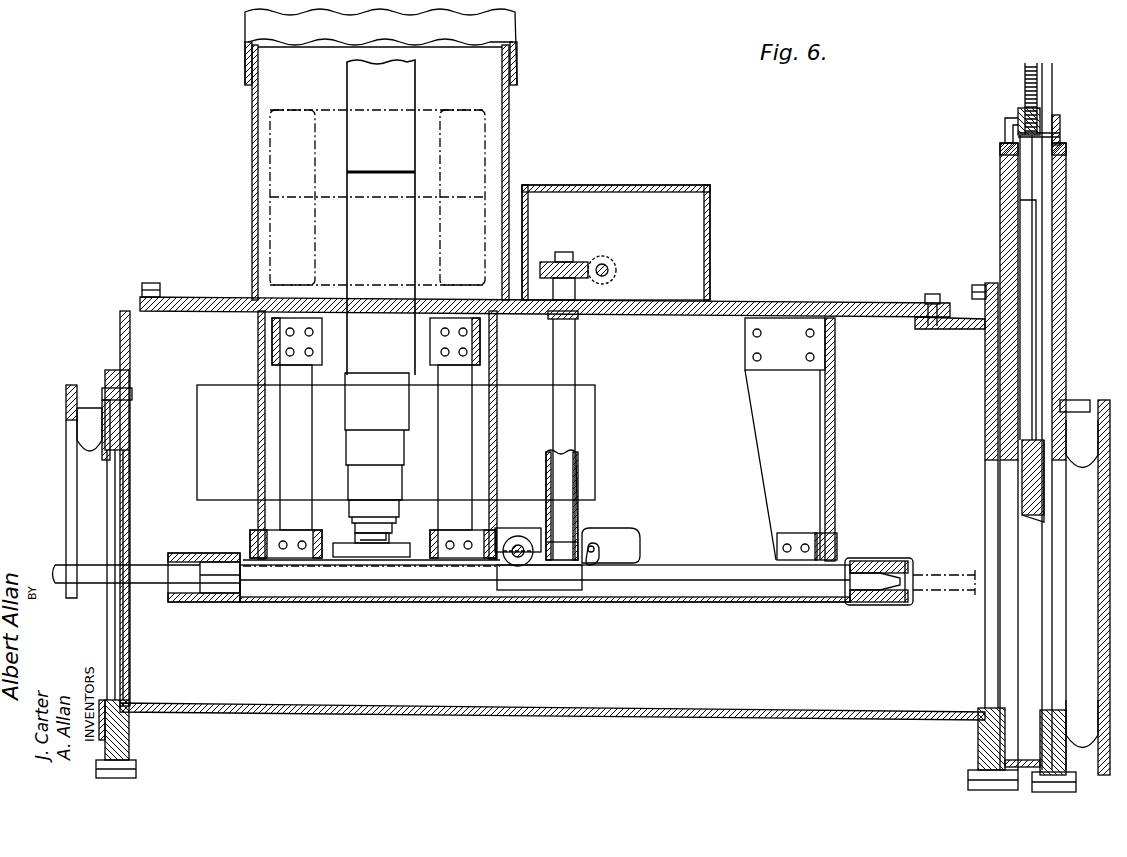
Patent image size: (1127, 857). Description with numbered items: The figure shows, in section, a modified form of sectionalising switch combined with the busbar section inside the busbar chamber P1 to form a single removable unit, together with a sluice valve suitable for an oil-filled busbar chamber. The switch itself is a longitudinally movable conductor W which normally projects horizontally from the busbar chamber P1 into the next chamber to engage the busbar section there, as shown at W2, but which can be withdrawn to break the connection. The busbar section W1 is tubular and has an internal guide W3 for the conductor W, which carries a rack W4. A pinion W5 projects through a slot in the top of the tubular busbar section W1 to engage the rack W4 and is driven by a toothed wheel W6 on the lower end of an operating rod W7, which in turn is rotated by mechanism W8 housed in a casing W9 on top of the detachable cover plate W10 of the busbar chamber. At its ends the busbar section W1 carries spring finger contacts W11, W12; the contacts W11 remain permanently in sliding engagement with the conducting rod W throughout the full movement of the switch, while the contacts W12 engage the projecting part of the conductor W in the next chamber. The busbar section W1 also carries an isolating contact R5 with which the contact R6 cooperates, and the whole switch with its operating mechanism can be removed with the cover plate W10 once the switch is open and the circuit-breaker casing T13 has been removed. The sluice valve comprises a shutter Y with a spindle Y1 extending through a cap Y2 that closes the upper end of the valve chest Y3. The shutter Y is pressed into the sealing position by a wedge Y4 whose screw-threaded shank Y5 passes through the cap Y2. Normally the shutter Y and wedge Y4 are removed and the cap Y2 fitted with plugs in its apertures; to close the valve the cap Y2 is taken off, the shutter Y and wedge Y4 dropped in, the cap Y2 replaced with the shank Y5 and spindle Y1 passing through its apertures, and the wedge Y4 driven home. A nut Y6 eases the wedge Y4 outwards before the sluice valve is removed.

The circuit-breaker casing T13 is at (518, 50).
The longitudinally movable conductor W is at (92, 572).
The busbar section W1 is at (805, 602).
The engagement of conductor with busbar section W2 is at (942, 572).
The internal guide W3 is at (570, 592).
The rack W4 is at (262, 602).
The pinion W5 is at (517, 566).
The toothed wheel W6 is at (600, 545).
The operating rod W7 is at (578, 462).
The mechanism W8 is at (574, 262).
The casing W9 is at (712, 215).
The detachable cover plate W10 is at (238, 297).
The spring finger contacts W11 is at (198, 602).
The spring finger contacts W12 is at (895, 605).
The isolating contact R5 is at (400, 532).
The contact R6 is at (336, 558).
The busbar chamber P1 is at (556, 706).
The shutter Y is at (1020, 597).
The spindle Y1 is at (1046, 322).
The cap Y2 is at (1060, 125).
The valve chest Y3 is at (1060, 240).
The wedge Y4 is at (1030, 218).
The screw-threaded shank Y5 is at (1025, 93).
The nut Y6 is at (1018, 112).